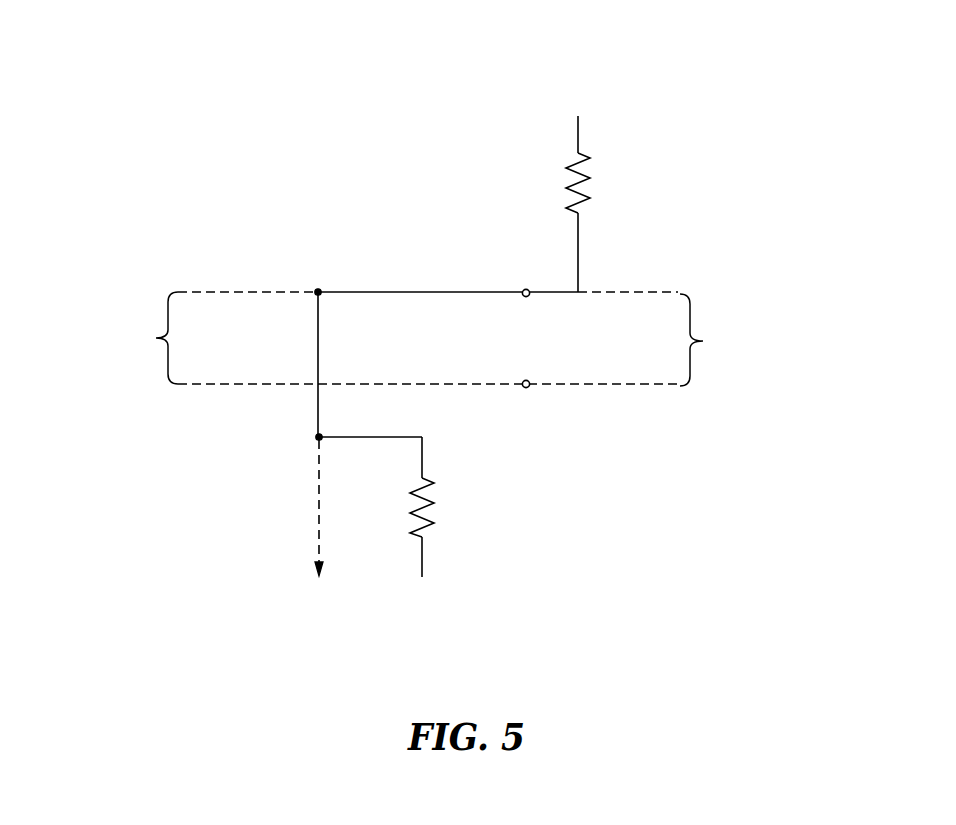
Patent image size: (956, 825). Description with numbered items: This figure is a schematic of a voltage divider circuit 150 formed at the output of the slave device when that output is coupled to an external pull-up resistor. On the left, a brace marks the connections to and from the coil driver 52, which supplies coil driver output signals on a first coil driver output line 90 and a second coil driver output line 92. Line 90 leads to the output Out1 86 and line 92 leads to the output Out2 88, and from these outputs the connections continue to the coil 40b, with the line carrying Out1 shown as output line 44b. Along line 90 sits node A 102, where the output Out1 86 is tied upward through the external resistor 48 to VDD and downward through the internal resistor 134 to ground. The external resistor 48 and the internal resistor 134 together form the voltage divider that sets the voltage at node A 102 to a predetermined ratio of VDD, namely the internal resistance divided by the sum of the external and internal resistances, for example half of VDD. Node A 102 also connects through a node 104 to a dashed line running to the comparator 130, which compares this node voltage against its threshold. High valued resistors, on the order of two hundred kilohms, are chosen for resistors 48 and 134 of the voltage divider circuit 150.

The voltage divider circuit 150 is at (668, 89).
The external resistor 48 is at (575, 184).
The coil driver output line 90 is at (413, 290).
The node A 102 is at (316, 289).
The output Out1 86 is at (522, 296).
The output line 44b is at (548, 296).
The coil driver output line 92 is at (397, 383).
The output Out2 88 is at (522, 380).
The coil driver 52 is at (198, 338).
The coil 40b is at (731, 340).
The node 104 is at (318, 412).
The comparator 130 is at (318, 550).
The resistor R1 134 is at (412, 493).